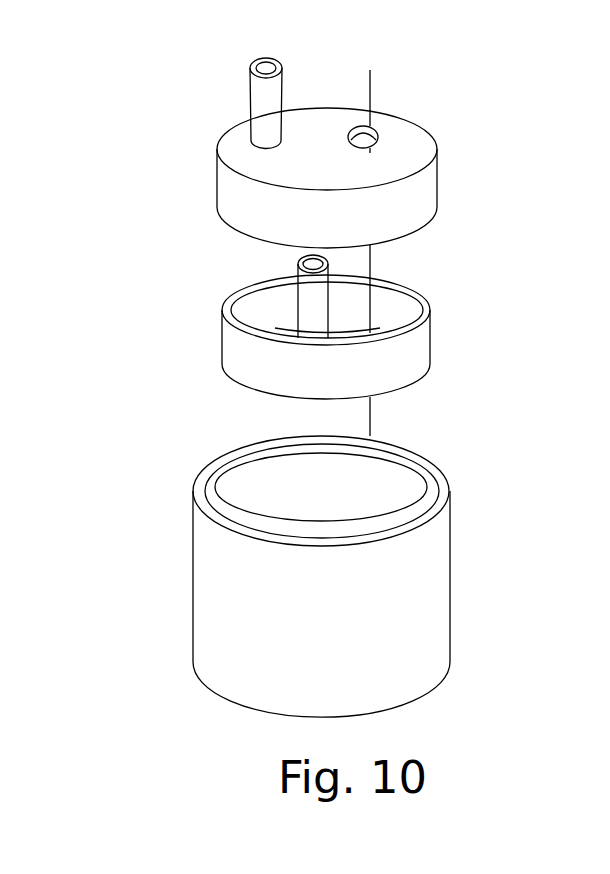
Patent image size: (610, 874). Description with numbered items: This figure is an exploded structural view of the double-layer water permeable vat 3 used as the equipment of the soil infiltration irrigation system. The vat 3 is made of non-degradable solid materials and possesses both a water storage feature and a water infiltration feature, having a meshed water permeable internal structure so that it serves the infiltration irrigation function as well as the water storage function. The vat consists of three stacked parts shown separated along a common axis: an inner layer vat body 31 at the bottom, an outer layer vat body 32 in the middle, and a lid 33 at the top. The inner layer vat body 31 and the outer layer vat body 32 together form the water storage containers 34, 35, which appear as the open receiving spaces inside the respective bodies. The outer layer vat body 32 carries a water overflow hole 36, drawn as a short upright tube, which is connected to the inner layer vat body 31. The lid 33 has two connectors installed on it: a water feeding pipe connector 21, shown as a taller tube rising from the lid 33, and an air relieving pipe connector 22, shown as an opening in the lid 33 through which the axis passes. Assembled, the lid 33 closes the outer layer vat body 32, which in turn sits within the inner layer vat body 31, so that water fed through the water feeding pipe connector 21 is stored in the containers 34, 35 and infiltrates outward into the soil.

The double-layer water permeable vat 3 is at (118, 188).
The water feeding pipe connector 21 is at (250, 64).
The air relieving pipe connector 22 is at (369, 95).
The inner layer vat body 31 is at (437, 594).
The outer layer vat body 32 is at (417, 353).
The lid 33 is at (420, 190).
The water storage container 34 is at (393, 488).
The water storage container 35 is at (396, 297).
The water overflow hole 36 is at (297, 262).